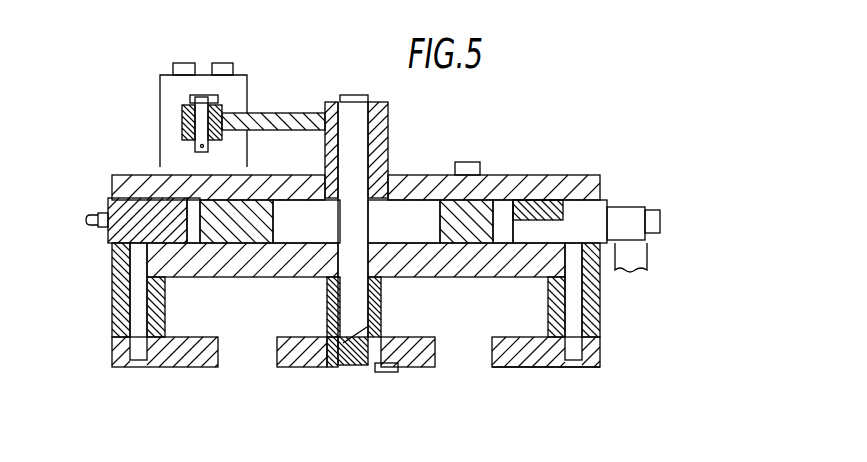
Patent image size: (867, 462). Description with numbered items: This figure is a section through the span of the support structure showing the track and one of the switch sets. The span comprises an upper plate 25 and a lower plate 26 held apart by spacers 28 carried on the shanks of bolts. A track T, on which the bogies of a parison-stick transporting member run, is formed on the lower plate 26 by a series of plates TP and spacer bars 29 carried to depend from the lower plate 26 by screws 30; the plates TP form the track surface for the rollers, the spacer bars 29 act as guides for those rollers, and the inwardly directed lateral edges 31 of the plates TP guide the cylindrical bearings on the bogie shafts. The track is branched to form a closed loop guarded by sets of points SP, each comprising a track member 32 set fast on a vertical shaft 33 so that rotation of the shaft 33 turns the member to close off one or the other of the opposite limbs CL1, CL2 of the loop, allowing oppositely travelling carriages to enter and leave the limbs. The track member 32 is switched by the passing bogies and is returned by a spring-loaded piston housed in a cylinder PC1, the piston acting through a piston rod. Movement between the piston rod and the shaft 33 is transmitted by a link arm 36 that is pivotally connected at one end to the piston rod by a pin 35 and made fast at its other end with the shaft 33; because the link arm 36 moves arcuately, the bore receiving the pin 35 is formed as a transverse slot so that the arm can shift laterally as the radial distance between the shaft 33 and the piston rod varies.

The upper plate 25 is at (530, 178).
The lower plate 26 is at (447, 257).
The spacers 28 is at (262, 203).
The spacer bars 29 is at (112, 300).
The screws 30 is at (138, 362).
The inwardly directed lateral edges 31 is at (218, 354).
The track member 32 is at (292, 343).
The vertical shaft 33 is at (370, 309).
The pin 35 is at (193, 150).
The link arm 36 is at (305, 113).
The cylinder PC1 is at (250, 86).
The first limb of the closed loop CL1 is at (245, 298).
The second limb of the closed loop CL2 is at (428, 292).
The set of points SP is at (436, 331).
The plates TP is at (183, 358).
The track T is at (546, 373).